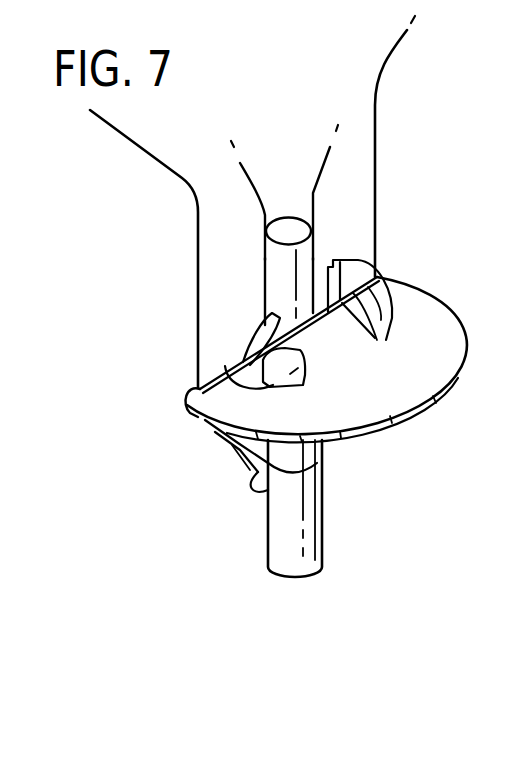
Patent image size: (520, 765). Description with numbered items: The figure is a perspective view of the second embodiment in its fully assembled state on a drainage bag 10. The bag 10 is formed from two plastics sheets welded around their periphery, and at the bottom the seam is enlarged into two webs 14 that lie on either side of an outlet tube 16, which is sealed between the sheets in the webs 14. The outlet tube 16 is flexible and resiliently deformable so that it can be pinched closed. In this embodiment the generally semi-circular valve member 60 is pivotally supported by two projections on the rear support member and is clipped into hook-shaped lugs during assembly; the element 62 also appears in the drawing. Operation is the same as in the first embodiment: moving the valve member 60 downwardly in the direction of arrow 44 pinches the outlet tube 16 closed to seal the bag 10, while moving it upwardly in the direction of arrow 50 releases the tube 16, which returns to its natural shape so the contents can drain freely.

The drainage bag 10 is at (294, 296).
The webs 14 is at (252, 202).
The outlet tube 16 is at (257, 351).
The arrow 44 is at (461, 466).
The arrow 50 is at (343, 326).
The valve member 60 is at (202, 447).
The clip tab 62 is at (265, 324).